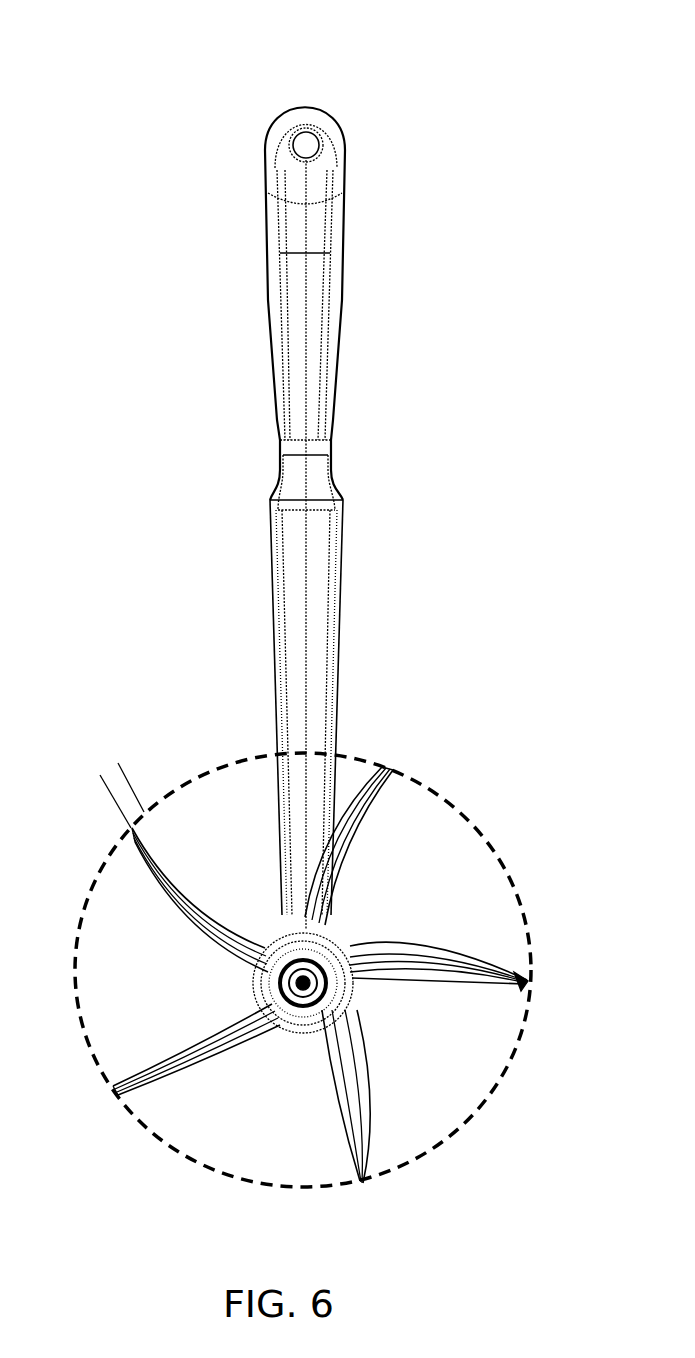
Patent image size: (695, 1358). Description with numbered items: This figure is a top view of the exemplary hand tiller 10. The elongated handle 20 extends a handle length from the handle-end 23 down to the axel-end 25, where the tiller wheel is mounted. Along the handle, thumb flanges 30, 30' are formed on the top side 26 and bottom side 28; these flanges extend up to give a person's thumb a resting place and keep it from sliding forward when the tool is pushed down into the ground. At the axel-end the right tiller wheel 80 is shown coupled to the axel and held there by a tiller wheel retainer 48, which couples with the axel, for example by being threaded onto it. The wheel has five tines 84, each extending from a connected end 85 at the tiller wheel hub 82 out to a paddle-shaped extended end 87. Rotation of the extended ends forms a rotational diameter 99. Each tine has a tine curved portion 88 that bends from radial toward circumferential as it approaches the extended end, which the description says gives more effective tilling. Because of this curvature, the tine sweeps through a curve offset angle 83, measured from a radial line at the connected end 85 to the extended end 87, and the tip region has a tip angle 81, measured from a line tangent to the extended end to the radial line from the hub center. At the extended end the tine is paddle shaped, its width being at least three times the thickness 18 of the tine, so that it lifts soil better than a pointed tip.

The hand tiller 10 is at (183, 200).
The handle-end 23 is at (297, 107).
The bottom side 28 is at (268, 297).
The top side 26 is at (343, 290).
The thumb flange 30' is at (232, 513).
The thumb flange 30 is at (385, 517).
The handle 20 is at (313, 657).
The axel-end 25 is at (280, 915).
The tiller wheel retainer 48 is at (345, 990).
The thickness 18 is at (155, 748).
The tiller wheel hub 82 is at (330, 903).
The right tiller wheel 80 is at (443, 950).
The tine 84 is at (395, 946).
The connected end 85 is at (348, 947).
The tine curved portion 88 is at (499, 957).
The extended end 87 is at (530, 980).
The rotational diameter 99 is at (527, 982).
The curve offset angle 83 is at (303, 983).
The tip angle 81 is at (303, 983).